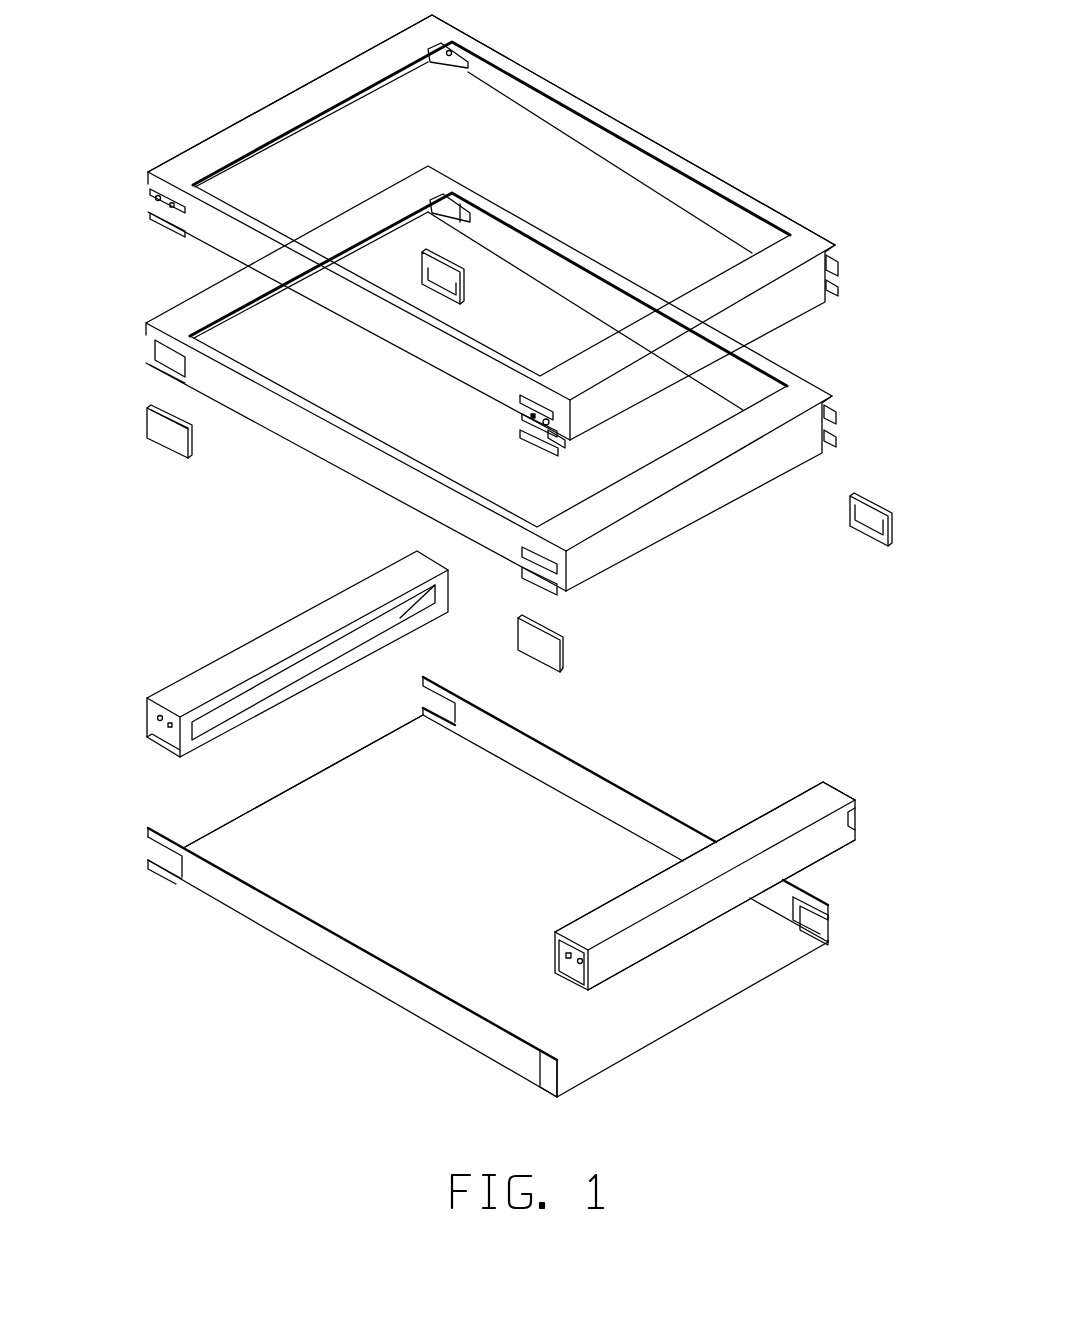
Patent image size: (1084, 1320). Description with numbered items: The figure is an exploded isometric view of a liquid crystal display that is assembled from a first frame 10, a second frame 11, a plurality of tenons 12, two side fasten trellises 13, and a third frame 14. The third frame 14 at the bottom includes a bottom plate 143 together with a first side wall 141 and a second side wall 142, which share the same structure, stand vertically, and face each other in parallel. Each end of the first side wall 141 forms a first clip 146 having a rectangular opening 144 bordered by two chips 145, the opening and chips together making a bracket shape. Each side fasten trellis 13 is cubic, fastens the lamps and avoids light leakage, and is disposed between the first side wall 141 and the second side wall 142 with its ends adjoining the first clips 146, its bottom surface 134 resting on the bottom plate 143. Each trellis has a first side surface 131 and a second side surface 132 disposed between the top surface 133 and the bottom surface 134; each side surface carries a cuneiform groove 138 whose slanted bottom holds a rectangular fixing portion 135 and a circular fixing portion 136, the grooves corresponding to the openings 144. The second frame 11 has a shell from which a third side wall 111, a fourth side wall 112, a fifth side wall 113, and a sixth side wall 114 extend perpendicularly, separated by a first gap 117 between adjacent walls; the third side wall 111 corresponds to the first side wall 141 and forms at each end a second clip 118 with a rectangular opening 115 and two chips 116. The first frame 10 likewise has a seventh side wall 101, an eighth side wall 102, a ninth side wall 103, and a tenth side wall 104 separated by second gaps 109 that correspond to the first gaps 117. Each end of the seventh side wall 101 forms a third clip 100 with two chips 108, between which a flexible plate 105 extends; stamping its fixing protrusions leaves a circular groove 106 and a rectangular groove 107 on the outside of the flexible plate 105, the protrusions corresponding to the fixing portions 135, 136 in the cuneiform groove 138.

The first frame 10 is at (780, 190).
The third clip 100 is at (142, 200).
The seventh side wall 101 is at (356, 310).
The eighth side wall 102 is at (800, 296).
The ninth side wall 103 is at (660, 176).
The tenth side wall 104 is at (395, 80).
The flexible plate 105 is at (525, 410).
The circular groove 106 is at (553, 418).
The rectangular groove 107 is at (530, 422).
The chips 108 is at (540, 398).
The second gap 109 is at (840, 286).
The second frame 11 is at (830, 378).
The third side wall 111 is at (321, 440).
The fourth side wall 112 is at (718, 490).
The fifth side wall 113 is at (497, 238).
The sixth side wall 114 is at (160, 348).
The rectangular opening 115 is at (548, 565).
The chips 116 is at (546, 556).
The first gap 117 is at (838, 447).
The second clip 118 is at (176, 366).
The tenon 12 is at (892, 534).
The side fasten trellis 13 is at (862, 781).
The first side surface 131 is at (556, 974).
The second side surface 132 is at (860, 817).
The top surface 133 is at (806, 806).
The bottom surface 134 is at (830, 866).
The rectangular fixing portion 135 is at (568, 976).
The circular fixing portion 136 is at (588, 962).
The cuneiform groove 138 is at (600, 978).
The third frame 14 is at (615, 750).
The first side wall 141 is at (362, 962).
The second side wall 142 is at (525, 752).
The bottom plate 143 is at (800, 950).
The rectangular opening 144 is at (173, 858).
The chips 145 is at (165, 835).
The first clip 146 is at (530, 1085).